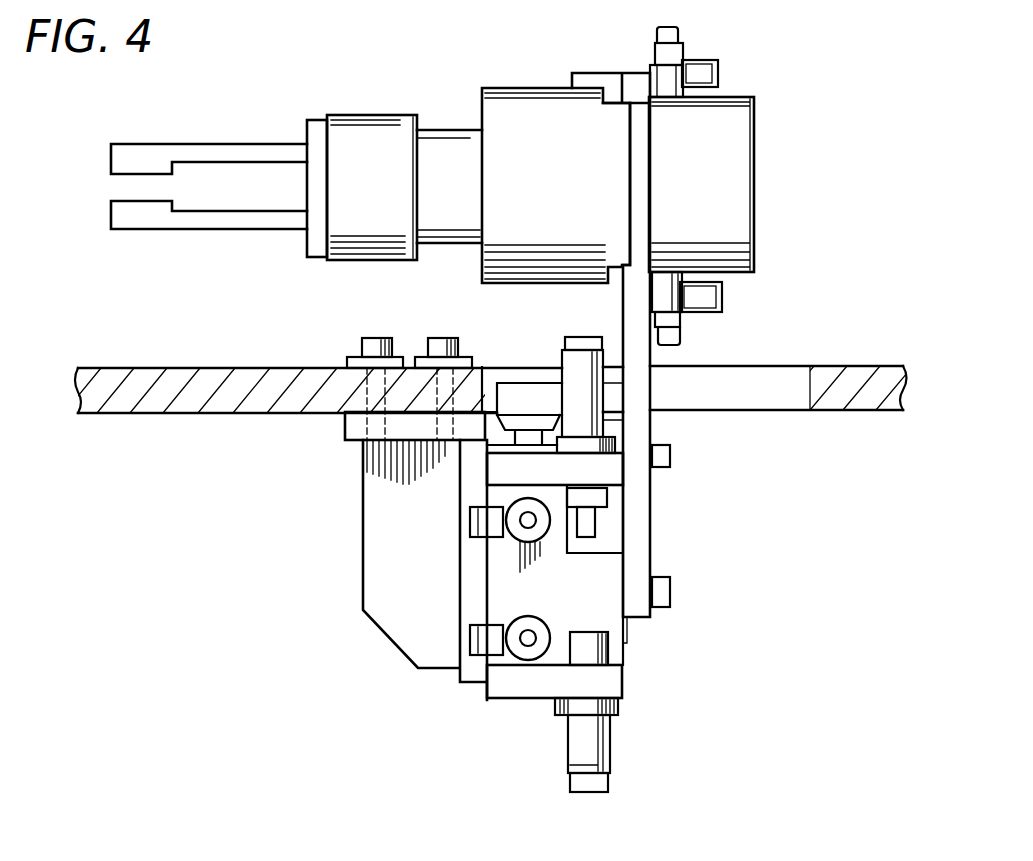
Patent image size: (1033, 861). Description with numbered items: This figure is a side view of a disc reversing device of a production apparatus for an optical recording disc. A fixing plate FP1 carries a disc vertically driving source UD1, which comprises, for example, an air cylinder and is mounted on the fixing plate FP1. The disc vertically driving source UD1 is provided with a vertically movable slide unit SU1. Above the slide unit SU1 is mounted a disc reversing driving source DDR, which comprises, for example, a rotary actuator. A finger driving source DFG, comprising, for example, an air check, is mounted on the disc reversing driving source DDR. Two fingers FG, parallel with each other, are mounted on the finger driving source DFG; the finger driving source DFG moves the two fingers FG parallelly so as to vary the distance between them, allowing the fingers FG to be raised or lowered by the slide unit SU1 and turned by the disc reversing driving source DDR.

The fingers FG is at (212, 217).
The finger driving source DFG is at (368, 125).
The disc reversing driving source DDR is at (737, 118).
The fixing plate FP1 is at (182, 400).
The slide unit SU1 is at (642, 512).
The disc vertically driving source UD1 is at (512, 573).